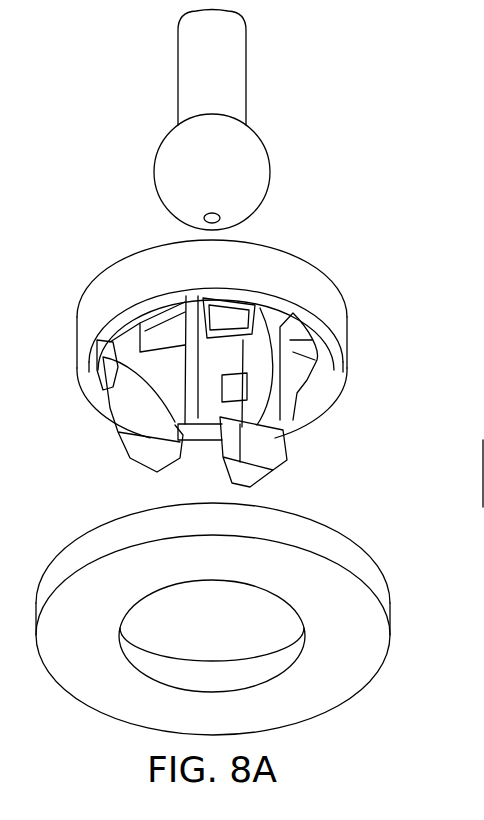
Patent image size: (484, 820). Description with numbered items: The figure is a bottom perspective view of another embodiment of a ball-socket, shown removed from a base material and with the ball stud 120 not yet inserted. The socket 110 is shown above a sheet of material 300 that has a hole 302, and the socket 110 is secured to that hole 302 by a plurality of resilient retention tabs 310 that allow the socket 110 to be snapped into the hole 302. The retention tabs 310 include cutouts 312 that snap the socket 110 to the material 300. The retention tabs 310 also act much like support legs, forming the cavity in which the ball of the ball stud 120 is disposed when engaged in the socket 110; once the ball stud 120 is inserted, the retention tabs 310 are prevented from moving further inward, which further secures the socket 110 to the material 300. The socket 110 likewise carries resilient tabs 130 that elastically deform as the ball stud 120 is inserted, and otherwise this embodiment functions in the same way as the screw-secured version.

The ball stud 120 is at (237, 82).
The socket 110 is at (335, 303).
The cutouts 312 is at (160, 333).
The retention tabs 310 is at (157, 380).
The sheet of material 300 is at (348, 548).
The hole 302 is at (242, 633).
The resilient tabs 130 is at (483, 405).